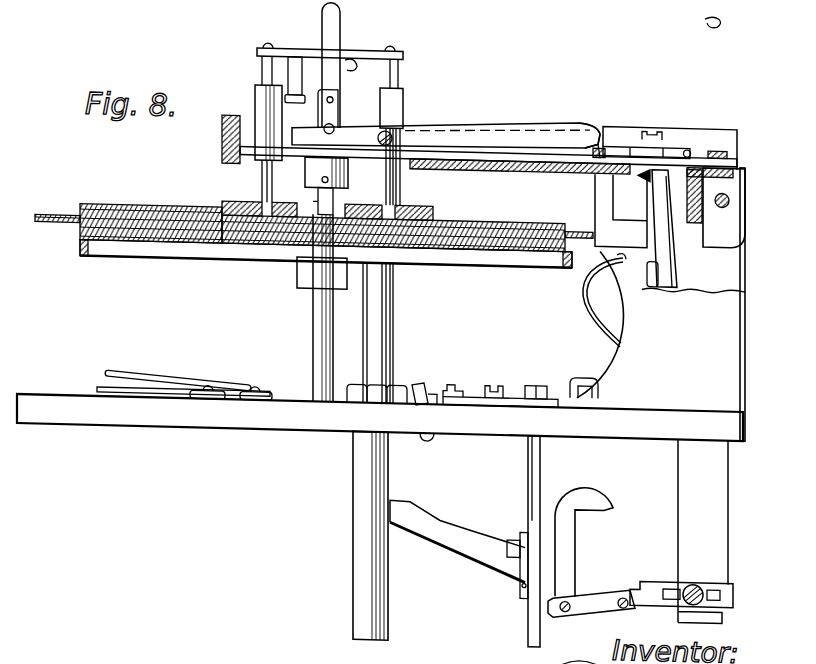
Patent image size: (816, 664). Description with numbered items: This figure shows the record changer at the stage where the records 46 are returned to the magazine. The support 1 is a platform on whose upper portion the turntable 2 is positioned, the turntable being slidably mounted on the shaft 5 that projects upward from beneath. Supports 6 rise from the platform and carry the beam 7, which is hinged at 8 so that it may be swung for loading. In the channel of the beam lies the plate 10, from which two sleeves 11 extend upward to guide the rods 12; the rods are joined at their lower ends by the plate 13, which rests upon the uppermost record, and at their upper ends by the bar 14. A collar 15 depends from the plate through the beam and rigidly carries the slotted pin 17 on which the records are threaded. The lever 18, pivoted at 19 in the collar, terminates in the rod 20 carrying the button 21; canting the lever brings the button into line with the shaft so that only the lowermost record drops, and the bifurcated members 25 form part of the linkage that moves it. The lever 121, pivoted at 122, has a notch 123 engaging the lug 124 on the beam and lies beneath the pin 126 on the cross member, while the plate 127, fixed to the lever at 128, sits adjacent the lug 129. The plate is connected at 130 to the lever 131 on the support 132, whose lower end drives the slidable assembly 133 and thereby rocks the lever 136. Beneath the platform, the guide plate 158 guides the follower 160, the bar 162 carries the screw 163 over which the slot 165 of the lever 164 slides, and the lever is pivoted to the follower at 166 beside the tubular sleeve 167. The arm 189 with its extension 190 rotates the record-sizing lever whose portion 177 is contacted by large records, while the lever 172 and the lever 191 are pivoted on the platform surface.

The support 1 is at (36, 394).
The turntable 2 is at (80, 249).
The shaft 5 is at (313, 320).
The supports 6 is at (735, 297).
The beam 7 is at (518, 159).
The hinges 8 is at (730, 183).
The plate 10 is at (486, 150).
The sleeves 11 is at (255, 90).
The rods 12 is at (401, 69).
The plate 13 is at (426, 197).
The bar 14 is at (297, 42).
The collar 15 is at (348, 174).
The pin 17 is at (335, 192).
The lever 18 is at (342, 11).
The pivot 19 is at (322, 173).
The rod 20 is at (313, 196).
The button 21 is at (305, 263).
The bifurcated members 25 is at (690, 132).
The records 46 is at (156, 205).
The lever 121 is at (480, 118).
The pivot 122 is at (391, 125).
The notch 123 is at (584, 109).
The lug 124 is at (592, 148).
The pin 126 is at (288, 61).
The plate 127 is at (338, 111).
The connection 128 is at (334, 93).
The lug 129 is at (354, 54).
The connection 130 is at (642, 162).
The lever 131 is at (656, 222).
The support 132 is at (676, 258).
The slidable assembly 133 is at (510, 392).
The lever 136 is at (422, 376).
The guide plate 158 is at (529, 489).
The follower 160 is at (520, 562).
The bar 162 is at (713, 520).
The screw 163 is at (698, 568).
The lever 164 is at (519, 582).
The slot 165 is at (668, 571).
The pivot 166 is at (524, 590).
The tubular sleeve 167 is at (352, 581).
The lever 172 is at (188, 377).
The portion 177 is at (583, 294).
The arm 189 is at (577, 583).
The extension 190 is at (604, 483).
The lever 191 is at (590, 362).